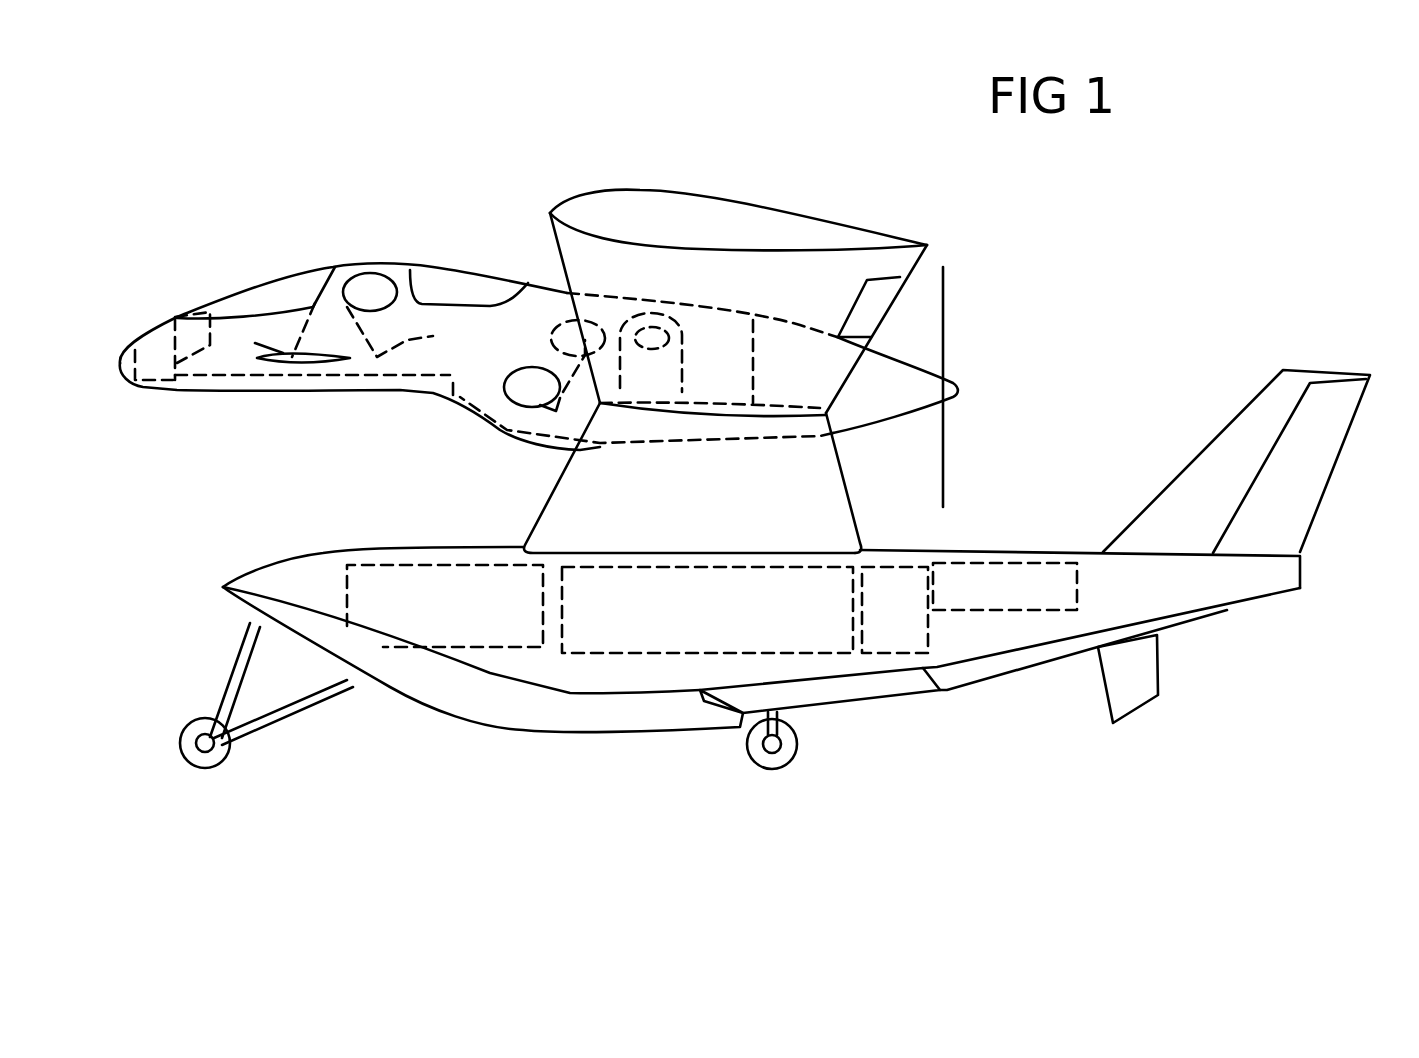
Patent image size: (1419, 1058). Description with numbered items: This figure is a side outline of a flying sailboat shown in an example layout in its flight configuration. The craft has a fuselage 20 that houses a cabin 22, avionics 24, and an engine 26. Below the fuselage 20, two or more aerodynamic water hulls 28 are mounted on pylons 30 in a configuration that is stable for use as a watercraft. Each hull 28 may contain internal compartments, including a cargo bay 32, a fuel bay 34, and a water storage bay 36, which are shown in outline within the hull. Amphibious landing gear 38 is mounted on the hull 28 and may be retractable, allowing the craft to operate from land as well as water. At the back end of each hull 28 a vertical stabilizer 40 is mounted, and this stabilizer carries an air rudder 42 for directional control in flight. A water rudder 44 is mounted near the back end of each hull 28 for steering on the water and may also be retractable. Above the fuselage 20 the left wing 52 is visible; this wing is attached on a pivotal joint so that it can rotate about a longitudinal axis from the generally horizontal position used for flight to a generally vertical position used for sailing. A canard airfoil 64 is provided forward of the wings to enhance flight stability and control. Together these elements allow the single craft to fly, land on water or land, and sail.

The fuselage 20 is at (168, 432).
The cabin 22 is at (447, 337).
The avionics 24 is at (163, 350).
The engine 26 is at (853, 400).
The aerodynamic water hull 28 is at (298, 580).
The pylon 30 is at (623, 508).
The cargo bay 32 is at (467, 623).
The fuel bay 34 is at (670, 625).
The water storage bay 36 is at (893, 628).
The amphibious landing gear 38 is at (190, 730).
The vertical stabilizer 40 is at (1213, 477).
The air rudder 42 is at (1283, 500).
The water rudder 44 is at (1128, 673).
The left wing 52 is at (758, 222).
The canard airfoil 64 is at (297, 353).